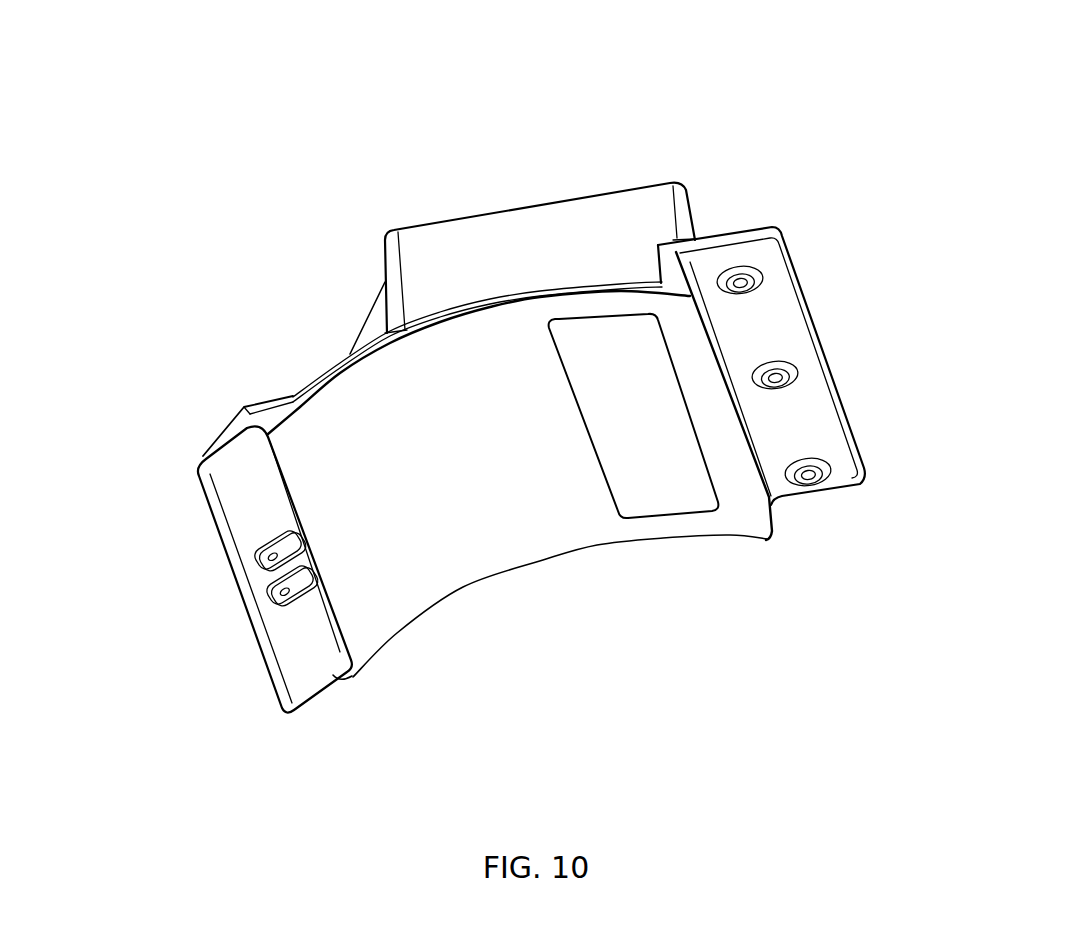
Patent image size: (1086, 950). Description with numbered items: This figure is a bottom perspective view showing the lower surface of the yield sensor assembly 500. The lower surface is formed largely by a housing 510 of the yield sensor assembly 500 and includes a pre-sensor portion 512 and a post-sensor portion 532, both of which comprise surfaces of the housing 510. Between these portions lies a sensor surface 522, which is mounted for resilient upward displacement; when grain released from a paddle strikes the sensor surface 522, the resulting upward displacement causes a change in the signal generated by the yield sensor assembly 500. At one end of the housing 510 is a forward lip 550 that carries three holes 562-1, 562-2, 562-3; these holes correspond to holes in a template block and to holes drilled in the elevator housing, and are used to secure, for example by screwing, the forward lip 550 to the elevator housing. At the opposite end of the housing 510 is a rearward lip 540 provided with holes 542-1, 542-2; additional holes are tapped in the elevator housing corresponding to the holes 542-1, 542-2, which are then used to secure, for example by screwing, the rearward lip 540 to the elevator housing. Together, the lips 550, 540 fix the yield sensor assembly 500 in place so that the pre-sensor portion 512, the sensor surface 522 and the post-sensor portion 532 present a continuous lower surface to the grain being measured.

The yield sensor assembly 500 is at (494, 84).
The housing 510 is at (493, 210).
The pre-sensor portion 512 is at (545, 478).
The sensor surface 522 is at (662, 465).
The post-sensor portion 532 is at (731, 473).
The rearward lip 540 is at (205, 497).
The hole 542-1 is at (285, 613).
The hole 542-2 is at (277, 543).
The forward lip 550 is at (868, 273).
The hole 562-1 is at (830, 465).
The hole 562-2 is at (757, 276).
The hole 562-3 is at (795, 372).